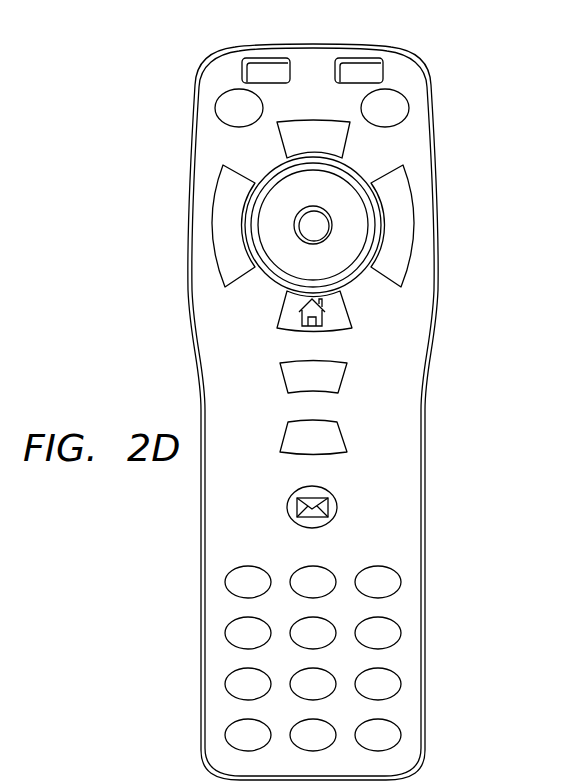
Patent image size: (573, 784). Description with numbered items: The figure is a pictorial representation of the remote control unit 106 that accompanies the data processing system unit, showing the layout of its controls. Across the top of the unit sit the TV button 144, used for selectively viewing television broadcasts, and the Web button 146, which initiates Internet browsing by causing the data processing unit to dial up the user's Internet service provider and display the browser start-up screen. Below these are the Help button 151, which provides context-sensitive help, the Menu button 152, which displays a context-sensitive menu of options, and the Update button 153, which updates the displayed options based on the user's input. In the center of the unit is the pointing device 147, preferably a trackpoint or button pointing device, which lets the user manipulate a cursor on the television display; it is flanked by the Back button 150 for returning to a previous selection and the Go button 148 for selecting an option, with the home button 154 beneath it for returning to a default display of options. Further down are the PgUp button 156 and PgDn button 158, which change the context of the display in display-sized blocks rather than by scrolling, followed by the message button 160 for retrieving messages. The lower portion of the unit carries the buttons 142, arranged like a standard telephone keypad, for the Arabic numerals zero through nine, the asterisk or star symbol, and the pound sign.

The remote control unit 106 is at (428, 460).
The buttons 142 is at (440, 565).
The TV button 144 is at (268, 58).
The Web button 146 is at (354, 58).
The pointing device 147 is at (318, 217).
The Go button 148 is at (420, 227).
The Back button 150 is at (207, 227).
The Help button 151 is at (215, 110).
The Menu button 152 is at (279, 120).
The Update button 153 is at (410, 110).
The home button 154 is at (281, 305).
The PgUp button 156 is at (343, 383).
The PgDn button 158 is at (284, 433).
The message button 160 is at (288, 507).